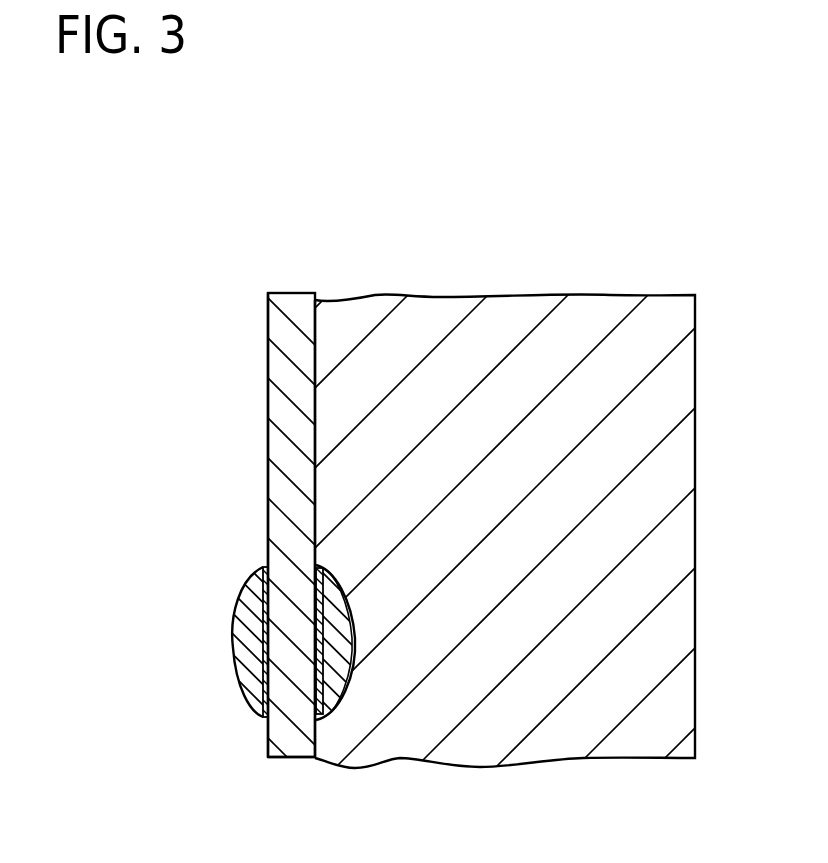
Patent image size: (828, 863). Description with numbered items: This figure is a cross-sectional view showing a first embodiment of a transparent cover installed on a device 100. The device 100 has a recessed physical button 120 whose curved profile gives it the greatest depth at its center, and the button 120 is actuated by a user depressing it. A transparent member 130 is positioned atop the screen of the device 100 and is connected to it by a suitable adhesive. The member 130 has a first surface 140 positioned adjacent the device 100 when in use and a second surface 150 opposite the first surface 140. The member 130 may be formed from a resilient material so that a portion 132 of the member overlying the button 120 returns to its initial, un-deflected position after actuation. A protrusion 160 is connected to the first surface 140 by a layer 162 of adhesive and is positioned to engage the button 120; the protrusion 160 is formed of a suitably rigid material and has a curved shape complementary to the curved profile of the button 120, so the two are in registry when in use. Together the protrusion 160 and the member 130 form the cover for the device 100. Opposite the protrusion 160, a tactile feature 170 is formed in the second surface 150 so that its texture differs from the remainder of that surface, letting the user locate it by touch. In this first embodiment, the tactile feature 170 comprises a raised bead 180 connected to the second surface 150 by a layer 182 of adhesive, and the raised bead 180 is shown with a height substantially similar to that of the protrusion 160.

The device 100 is at (528, 222).
The physical button 120 is at (356, 652).
The transparent member 130 is at (288, 290).
The portion of the member overlying the button 132 is at (294, 655).
The first surface 140 is at (316, 316).
The second surface 150 is at (268, 371).
The protrusion 160 is at (335, 652).
The layer of adhesive 162 is at (326, 698).
The tactile feature 170 is at (212, 650).
The raised bead 180 is at (242, 596).
The layer of adhesive 182 is at (265, 567).